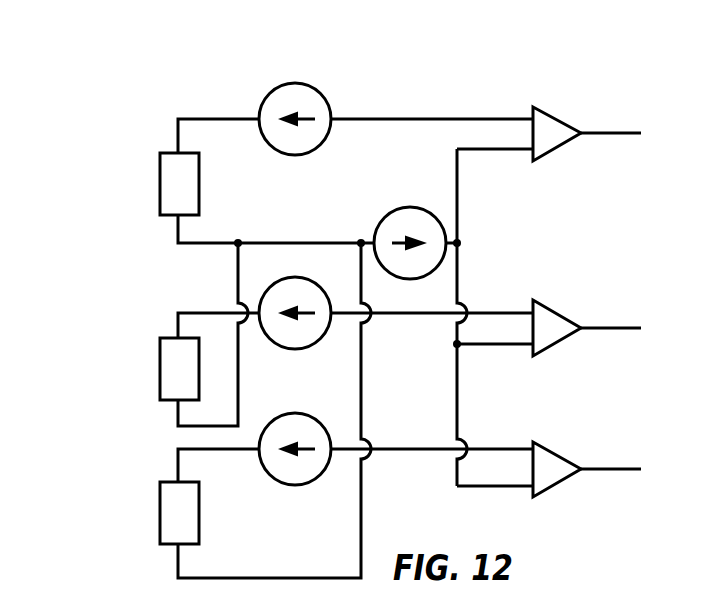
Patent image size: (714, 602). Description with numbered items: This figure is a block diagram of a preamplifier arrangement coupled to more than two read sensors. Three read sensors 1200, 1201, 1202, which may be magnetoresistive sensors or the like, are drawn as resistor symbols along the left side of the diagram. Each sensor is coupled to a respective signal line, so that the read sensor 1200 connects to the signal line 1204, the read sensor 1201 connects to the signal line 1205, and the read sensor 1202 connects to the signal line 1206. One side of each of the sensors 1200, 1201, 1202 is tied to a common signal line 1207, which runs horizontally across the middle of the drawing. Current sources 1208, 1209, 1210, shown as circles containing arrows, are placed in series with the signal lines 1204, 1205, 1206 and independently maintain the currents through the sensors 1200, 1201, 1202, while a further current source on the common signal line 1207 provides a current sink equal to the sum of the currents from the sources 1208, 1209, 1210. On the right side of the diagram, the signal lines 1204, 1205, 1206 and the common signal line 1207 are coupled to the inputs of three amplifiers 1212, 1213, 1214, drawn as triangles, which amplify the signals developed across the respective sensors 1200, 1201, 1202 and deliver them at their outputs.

The read sensor 1200 is at (160, 188).
The read sensor 1201 is at (160, 352).
The read sensor 1202 is at (160, 508).
The signal line 1204 is at (181, 116).
The signal line 1205 is at (192, 311).
The signal line 1206 is at (177, 456).
The common signal line 1207 is at (297, 241).
The current source 1208 is at (317, 86).
The current source 1209 is at (300, 344).
The current source 1210 is at (300, 486).
The amplifier 1212 is at (562, 116).
The amplifier 1213 is at (562, 312).
The amplifier 1214 is at (553, 446).